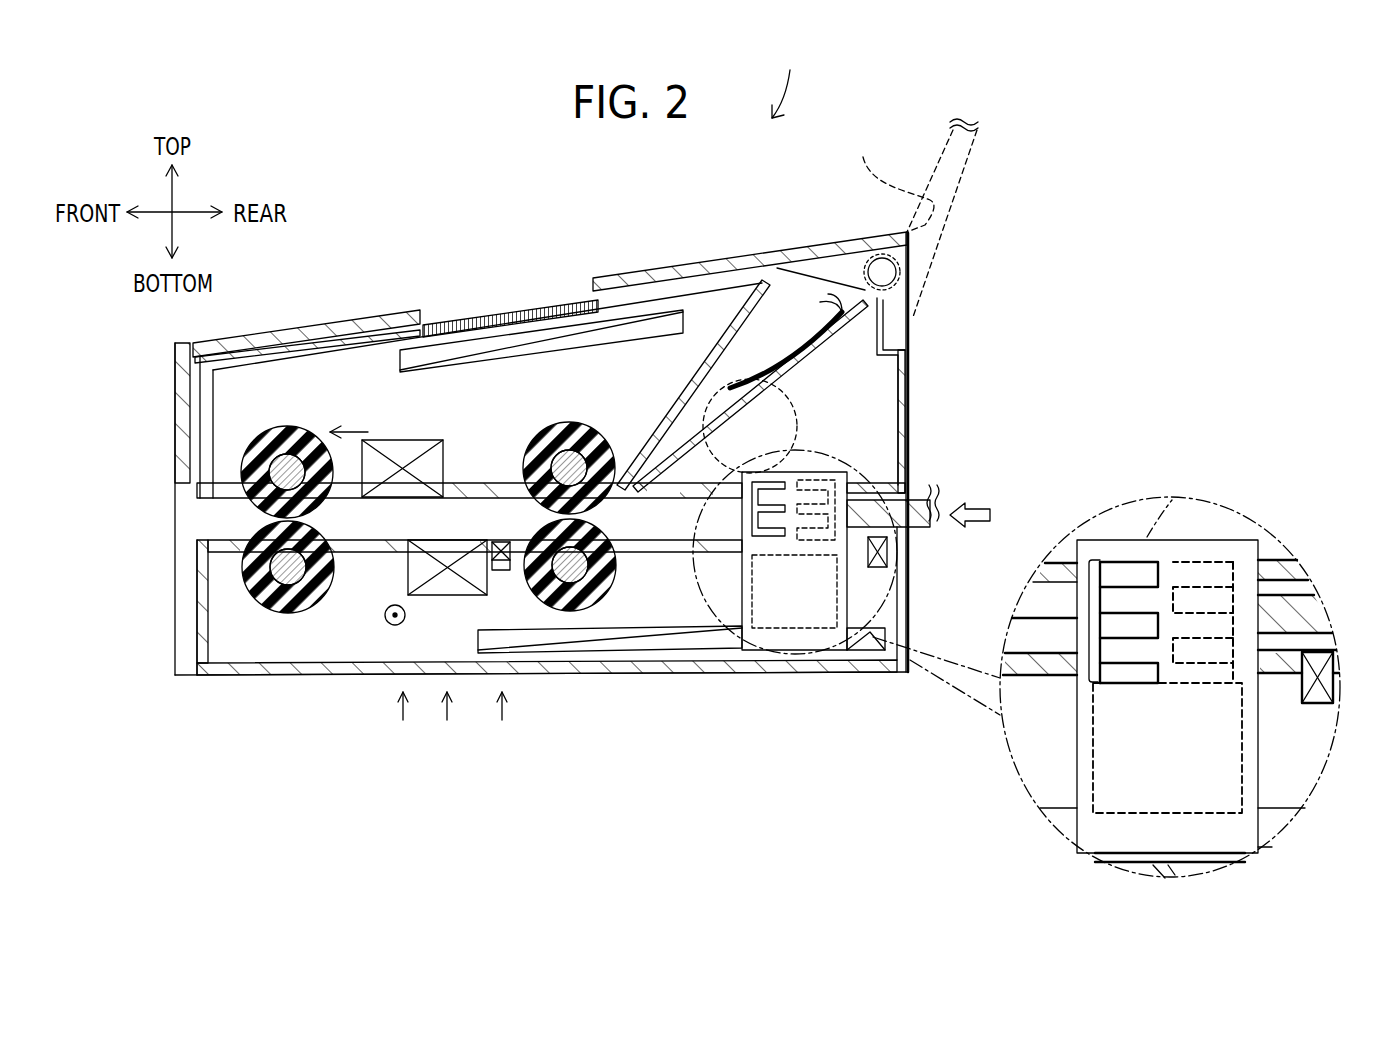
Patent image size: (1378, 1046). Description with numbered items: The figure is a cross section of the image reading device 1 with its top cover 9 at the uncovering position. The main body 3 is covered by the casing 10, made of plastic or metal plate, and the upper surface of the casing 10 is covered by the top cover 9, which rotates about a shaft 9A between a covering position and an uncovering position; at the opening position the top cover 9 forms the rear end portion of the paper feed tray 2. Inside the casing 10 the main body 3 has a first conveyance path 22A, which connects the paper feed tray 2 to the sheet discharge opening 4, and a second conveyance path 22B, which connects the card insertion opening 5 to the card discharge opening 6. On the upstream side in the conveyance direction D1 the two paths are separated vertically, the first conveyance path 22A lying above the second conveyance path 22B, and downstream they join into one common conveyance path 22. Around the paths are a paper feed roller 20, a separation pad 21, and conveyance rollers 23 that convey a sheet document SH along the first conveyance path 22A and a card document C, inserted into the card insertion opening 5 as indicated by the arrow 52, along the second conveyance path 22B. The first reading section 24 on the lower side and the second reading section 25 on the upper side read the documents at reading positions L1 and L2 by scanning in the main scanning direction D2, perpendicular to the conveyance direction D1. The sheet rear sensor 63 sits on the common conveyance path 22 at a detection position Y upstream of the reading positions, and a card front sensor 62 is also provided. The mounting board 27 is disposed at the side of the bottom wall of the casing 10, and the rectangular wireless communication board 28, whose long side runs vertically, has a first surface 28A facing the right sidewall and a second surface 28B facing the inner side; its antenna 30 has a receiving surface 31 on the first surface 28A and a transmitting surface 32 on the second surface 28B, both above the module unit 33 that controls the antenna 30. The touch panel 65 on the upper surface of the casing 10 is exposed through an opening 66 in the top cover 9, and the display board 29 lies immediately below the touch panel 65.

The image reading device 1 is at (800, 62).
The paper feed tray 2 is at (860, 340).
The main body 3 is at (915, 360).
The sheet discharge opening 4 is at (163, 516).
The card discharge opening 6 is at (227, 538).
The card insertion opening 5 is at (905, 527).
The top cover 9 is at (345, 337).
The shaft 9A is at (908, 265).
The casing 10 is at (900, 595).
The paper feed roller 20 is at (798, 428).
The separation pad 21 is at (730, 382).
The common conveyance path 22 is at (504, 496).
The first conveyance path 22A is at (667, 425).
The second conveyance path 22B is at (662, 532).
The conveyance rollers 23 is at (327, 495).
The first reading section 24 is at (445, 597).
The second reading section 25 is at (425, 440).
The mounting board 27 is at (583, 653).
The wireless communication board 28 is at (785, 650).
The first surface 28A is at (1107, 648).
The second surface 28B is at (1240, 594).
The display board 29 is at (625, 330).
The antenna 30 is at (1088, 620).
The receiving surface 31 is at (1132, 560).
The transmitting surface 32 is at (1245, 566).
The module unit 33 is at (1222, 748).
The arrow 52 is at (984, 517).
The card front sensor 62 is at (882, 568).
The sheet rear sensor 63 is at (502, 570).
The touch panel 65 is at (521, 310).
The opening 66 is at (425, 318).
The sheet document SH is at (793, 335).
The card document C is at (918, 503).
The conveyance direction D1 is at (349, 417).
The main scanning direction D2 is at (391, 625).
The reading position L1 is at (447, 723).
The reading position L2 is at (403, 723).
The detection position Y is at (501, 723).